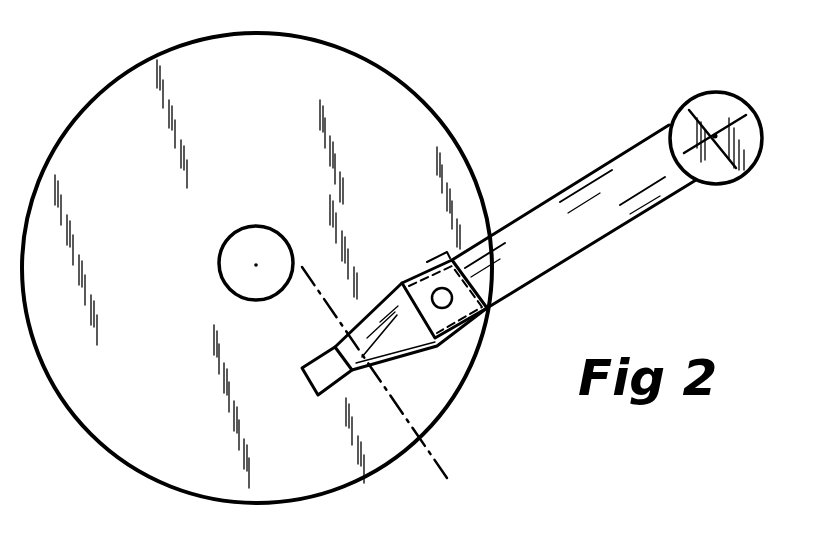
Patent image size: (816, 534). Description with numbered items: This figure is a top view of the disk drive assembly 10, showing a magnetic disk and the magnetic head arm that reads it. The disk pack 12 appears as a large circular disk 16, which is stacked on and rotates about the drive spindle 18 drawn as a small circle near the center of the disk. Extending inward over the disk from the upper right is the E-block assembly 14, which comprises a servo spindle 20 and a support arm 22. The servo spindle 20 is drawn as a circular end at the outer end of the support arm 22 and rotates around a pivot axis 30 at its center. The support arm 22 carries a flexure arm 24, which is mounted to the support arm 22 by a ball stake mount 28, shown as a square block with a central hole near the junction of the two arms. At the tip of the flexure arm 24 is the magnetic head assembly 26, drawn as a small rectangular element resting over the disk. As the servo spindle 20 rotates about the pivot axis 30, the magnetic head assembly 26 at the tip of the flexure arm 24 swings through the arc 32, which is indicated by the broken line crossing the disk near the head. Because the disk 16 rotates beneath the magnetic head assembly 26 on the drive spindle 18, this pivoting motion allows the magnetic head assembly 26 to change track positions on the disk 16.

The disk drive assembly 10 is at (500, 115).
The disk pack 12 is at (100, 90).
The E-block assembly 14 is at (668, 211).
The disk 16 is at (315, 52).
The drive spindle 18 is at (251, 226).
The servo spindle 20 is at (745, 172).
The support arm 22 is at (579, 237).
The flexure arm 24 is at (397, 338).
The magnetic head assembly 26 is at (308, 364).
The ball stake mount 28 is at (425, 256).
The pivot axis 30 is at (715, 135).
The arc 32 is at (424, 457).